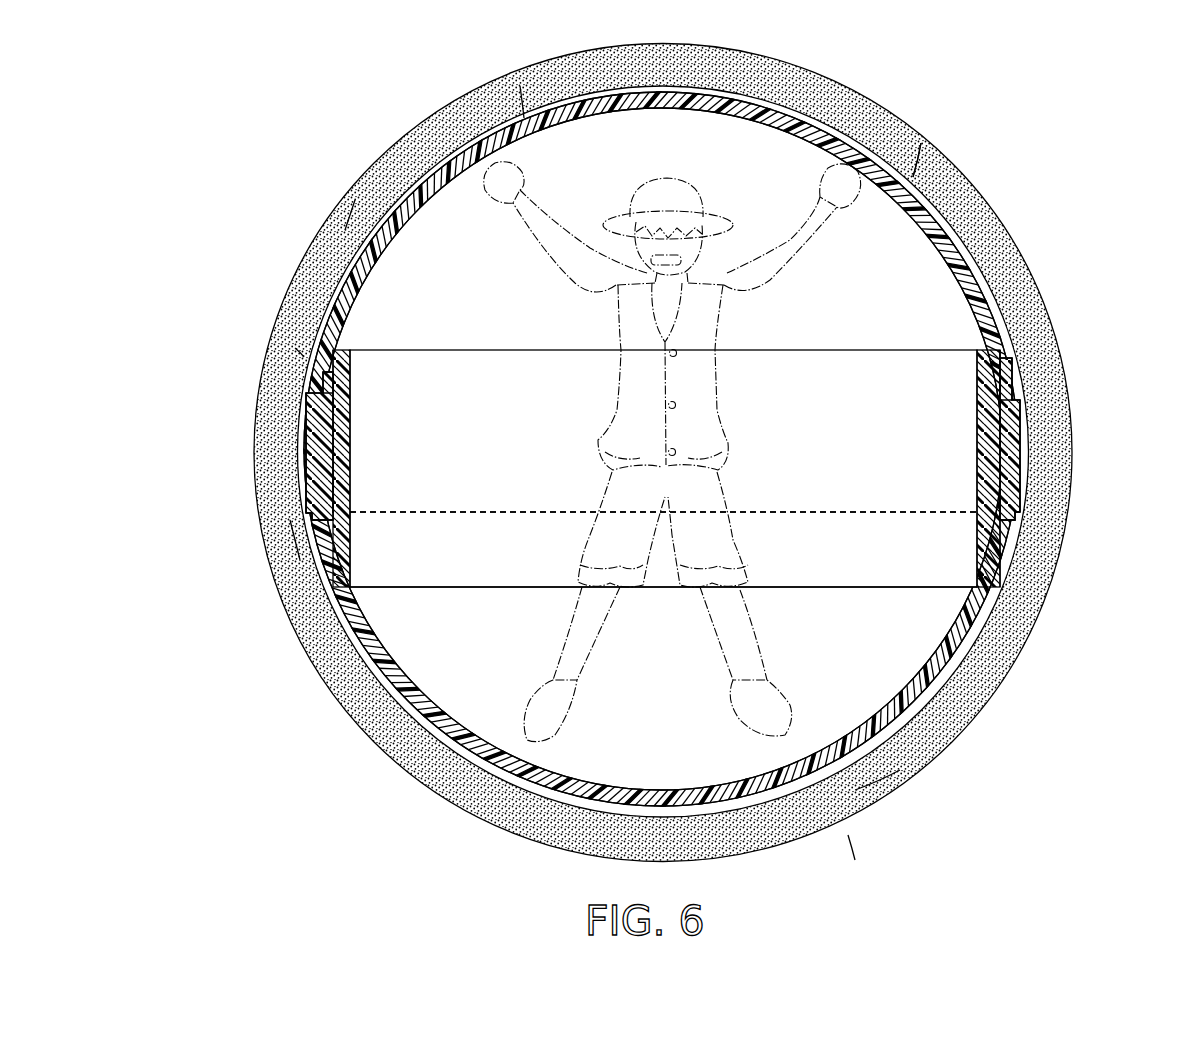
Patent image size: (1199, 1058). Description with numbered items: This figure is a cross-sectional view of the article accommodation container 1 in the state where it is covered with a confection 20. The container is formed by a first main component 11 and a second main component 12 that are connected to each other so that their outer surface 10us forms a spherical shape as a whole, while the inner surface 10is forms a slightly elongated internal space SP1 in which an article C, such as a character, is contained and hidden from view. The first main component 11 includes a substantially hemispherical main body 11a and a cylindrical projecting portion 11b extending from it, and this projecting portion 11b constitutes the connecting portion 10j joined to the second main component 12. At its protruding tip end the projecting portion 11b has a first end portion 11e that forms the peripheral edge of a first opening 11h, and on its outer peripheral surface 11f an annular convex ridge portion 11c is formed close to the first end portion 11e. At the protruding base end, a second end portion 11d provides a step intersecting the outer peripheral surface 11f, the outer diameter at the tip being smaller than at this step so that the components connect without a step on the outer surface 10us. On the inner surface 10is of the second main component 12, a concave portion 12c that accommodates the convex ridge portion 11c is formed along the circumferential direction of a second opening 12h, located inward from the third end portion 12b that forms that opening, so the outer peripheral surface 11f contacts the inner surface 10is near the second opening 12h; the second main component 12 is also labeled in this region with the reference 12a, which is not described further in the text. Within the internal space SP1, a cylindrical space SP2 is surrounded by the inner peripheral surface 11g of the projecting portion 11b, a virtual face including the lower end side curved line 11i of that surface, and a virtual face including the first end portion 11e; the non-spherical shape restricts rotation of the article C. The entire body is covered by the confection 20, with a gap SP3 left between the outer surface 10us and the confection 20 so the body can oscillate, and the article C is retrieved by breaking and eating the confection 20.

The article accommodation container 1 is at (523, 112).
The confection 20 is at (422, 118).
The outer surface 10us is at (387, 193).
The inner surface 10is is at (390, 243).
The connecting portion 10j is at (1135, 325).
The first main component 11 is at (352, 620).
The main body 11a is at (858, 792).
The projecting portion 11b is at (350, 450).
The convex ridge portion 11c is at (350, 372).
The second end portion 11d is at (350, 535).
The first end portion 11e is at (345, 345).
The outer peripheral surface 11f is at (350, 490).
The inner peripheral surface 11g is at (350, 402).
The first opening 11h is at (352, 300).
The lower end side curved line 11i is at (500, 588).
The second main component 12 is at (337, 370).
The outer face 12a is at (312, 445).
The third end portion 12b is at (318, 500).
The concave portion 12c is at (318, 385).
The second opening 12h is at (512, 512).
The article C is at (920, 140).
The internal space SP1 is at (540, 323).
The cylindrical space SP2 is at (535, 473).
The gap SP3 is at (383, 680).